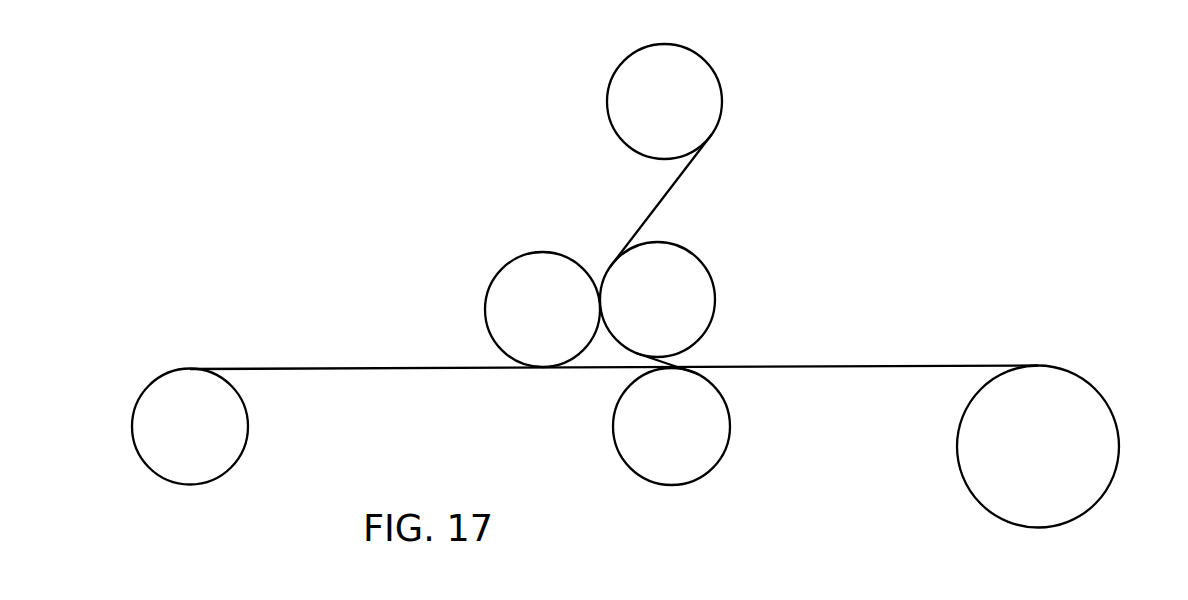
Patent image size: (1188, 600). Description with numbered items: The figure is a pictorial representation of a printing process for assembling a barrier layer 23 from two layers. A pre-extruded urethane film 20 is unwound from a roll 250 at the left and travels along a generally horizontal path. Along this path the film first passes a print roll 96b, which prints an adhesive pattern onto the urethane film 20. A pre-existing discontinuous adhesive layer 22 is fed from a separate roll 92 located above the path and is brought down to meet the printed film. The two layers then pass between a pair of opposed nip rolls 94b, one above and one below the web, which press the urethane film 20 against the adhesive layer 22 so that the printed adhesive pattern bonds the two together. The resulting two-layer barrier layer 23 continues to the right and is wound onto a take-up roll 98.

The roll 92 is at (722, 92).
The adhesive layer 22 is at (667, 193).
The print roll 96b is at (526, 252).
The nip rolls 94b is at (715, 300).
The urethane film 20 is at (392, 371).
The roll 250 is at (237, 463).
The take-up roll 98 is at (1110, 483).
The barrier layer 23 is at (932, 331).